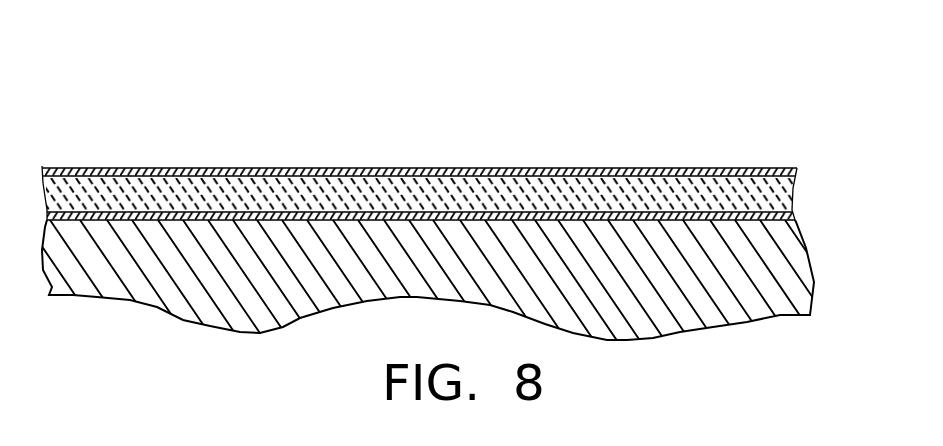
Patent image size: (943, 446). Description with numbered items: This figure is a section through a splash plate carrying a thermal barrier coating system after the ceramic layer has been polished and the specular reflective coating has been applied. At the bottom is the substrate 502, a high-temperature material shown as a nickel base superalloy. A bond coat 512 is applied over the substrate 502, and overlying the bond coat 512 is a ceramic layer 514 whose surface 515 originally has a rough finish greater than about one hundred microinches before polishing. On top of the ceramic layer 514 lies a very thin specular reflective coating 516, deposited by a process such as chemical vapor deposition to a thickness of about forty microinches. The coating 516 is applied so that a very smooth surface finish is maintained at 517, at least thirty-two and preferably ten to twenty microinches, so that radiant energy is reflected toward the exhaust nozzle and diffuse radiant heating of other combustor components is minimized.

The substrate 502 is at (630, 308).
The bond coat 512 is at (97, 219).
The ceramic layer 514 is at (768, 183).
The surface 515 is at (552, 175).
The specular reflective coating 516 is at (250, 166).
The smooth surface finish 517 is at (493, 167).